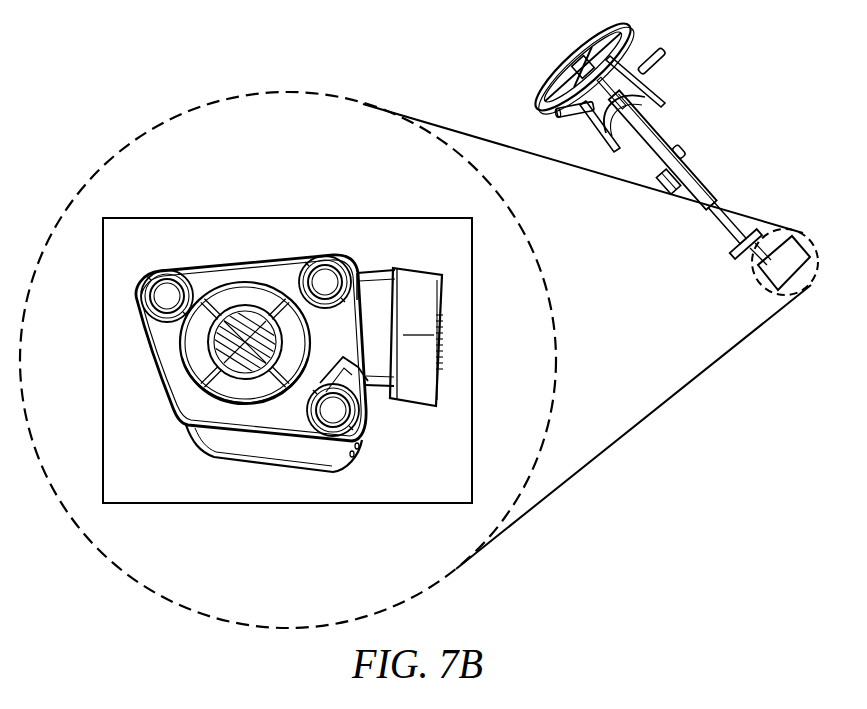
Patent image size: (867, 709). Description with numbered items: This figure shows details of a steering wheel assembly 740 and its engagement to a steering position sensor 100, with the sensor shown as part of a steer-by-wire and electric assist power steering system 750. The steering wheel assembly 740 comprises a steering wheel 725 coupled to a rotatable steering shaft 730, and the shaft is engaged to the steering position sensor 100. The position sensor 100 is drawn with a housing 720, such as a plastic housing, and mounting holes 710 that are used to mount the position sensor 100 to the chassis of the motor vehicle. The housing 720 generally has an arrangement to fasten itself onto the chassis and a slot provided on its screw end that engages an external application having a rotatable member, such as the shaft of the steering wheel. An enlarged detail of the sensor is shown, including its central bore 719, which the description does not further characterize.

The steering position sensor 100 is at (429, 353).
The mounting holes 710 is at (341, 416).
The central bore 719 is at (232, 322).
The housing 720 is at (203, 434).
The steering wheel 725 is at (568, 45).
The rotatable steering shaft 730 is at (708, 183).
The steering wheel assembly 740 is at (631, 137).
The steer-by-wire and electric assist power steering system 750 is at (250, 218).